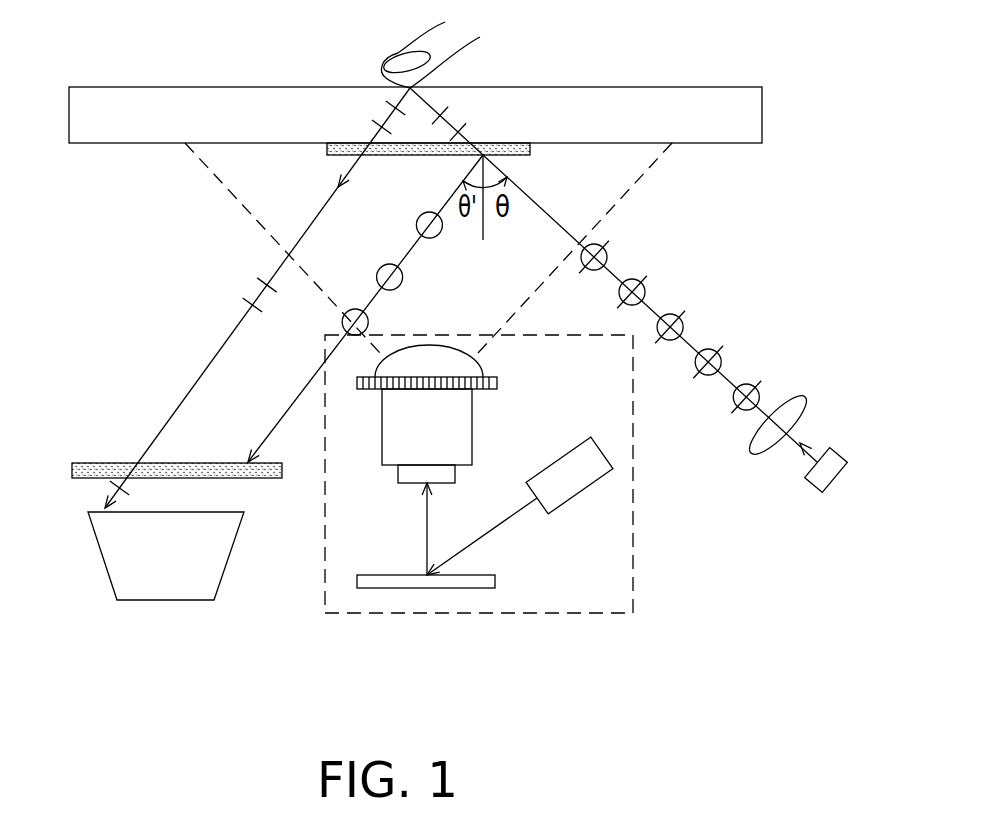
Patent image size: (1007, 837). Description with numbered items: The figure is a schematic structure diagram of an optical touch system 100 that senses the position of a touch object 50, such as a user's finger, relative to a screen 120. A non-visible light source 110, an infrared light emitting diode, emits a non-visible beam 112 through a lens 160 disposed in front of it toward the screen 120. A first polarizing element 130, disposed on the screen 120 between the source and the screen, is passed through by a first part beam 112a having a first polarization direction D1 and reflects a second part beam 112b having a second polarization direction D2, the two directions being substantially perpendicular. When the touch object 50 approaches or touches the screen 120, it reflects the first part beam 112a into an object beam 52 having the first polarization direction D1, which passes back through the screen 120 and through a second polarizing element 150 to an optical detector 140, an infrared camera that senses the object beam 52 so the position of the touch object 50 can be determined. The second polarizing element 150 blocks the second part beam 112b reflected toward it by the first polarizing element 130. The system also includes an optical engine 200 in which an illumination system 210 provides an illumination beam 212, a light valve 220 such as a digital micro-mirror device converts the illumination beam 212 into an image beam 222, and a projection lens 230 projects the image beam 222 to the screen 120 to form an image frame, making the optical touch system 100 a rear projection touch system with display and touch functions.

The optical touch system 100 is at (760, 677).
The touch object 50 is at (407, 58).
The object beam 52 is at (383, 117).
The non-visible light source 110 is at (820, 490).
The non-visible beam 112 is at (753, 407).
The first part beam 112a is at (447, 137).
The second part beam 112b is at (410, 255).
The screen 120 is at (758, 120).
The first polarizing element 130 is at (493, 147).
The optical detector 140 is at (167, 600).
The second polarizing element 150 is at (93, 470).
The lens 160 is at (802, 398).
The optical engine 200 is at (350, 613).
The illumination system 210 is at (570, 492).
The illumination beam 212 is at (500, 527).
The light valve 220 is at (418, 588).
The image beam 222 is at (640, 177).
The projection lens 230 is at (465, 420).
The first polarization direction D1 is at (308, 223).
The second polarization direction D2 is at (383, 268).